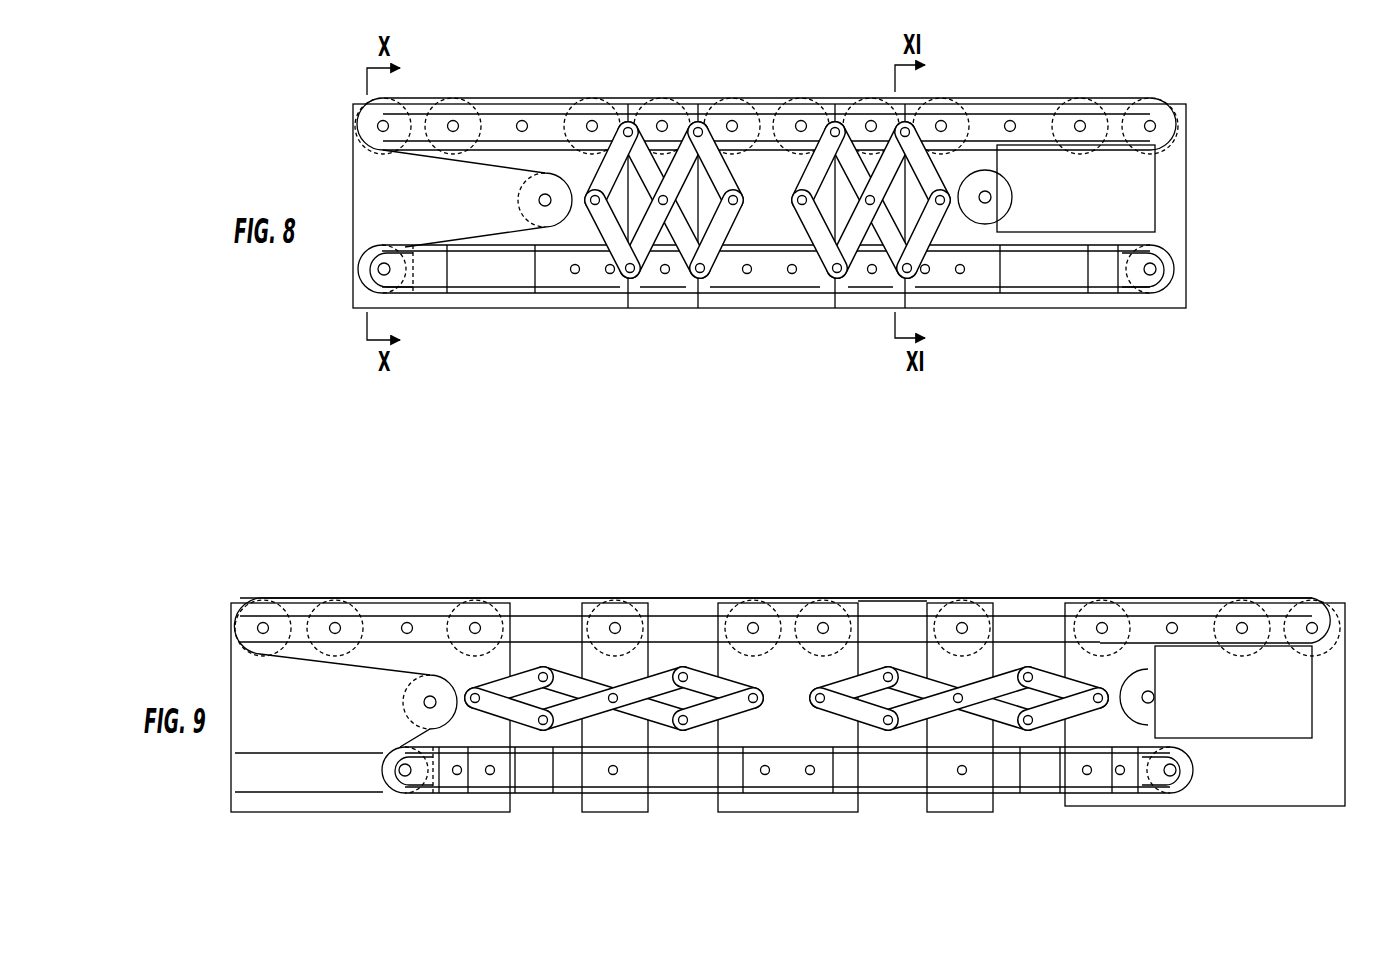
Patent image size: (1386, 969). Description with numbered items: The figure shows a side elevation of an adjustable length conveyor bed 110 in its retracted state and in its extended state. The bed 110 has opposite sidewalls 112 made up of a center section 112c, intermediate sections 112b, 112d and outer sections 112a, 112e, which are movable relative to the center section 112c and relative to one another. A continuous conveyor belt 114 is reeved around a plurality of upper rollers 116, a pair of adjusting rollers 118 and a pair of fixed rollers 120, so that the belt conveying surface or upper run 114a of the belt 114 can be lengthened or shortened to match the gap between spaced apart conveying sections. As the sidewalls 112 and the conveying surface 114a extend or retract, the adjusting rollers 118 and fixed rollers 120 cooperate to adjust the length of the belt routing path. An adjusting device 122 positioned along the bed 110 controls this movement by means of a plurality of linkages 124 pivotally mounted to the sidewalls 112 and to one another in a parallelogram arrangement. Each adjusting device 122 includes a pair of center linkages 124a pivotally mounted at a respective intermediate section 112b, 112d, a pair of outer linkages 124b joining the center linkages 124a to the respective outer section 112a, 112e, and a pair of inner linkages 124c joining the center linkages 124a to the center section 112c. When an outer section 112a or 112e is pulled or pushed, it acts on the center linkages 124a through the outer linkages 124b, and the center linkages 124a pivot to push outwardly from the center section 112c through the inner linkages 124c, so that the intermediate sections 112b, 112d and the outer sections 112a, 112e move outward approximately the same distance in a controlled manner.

In FIG. 8, the adjustable conveyor bed 110 is at (565, 388).
In FIG. 9, the adjustable conveyor bed 110 is at (499, 548).
In FIG. 8, the sidewalls 112 is at (1212, 263).
In FIG. 9, the sidewalls 112 is at (381, 829).
In FIG. 8, the outer section 112a is at (493, 302).
In FIG. 9, the outer section 112a is at (280, 805).
In FIG. 8, the intermediate section 112b is at (653, 302).
In FIG. 9, the intermediate section 112b is at (635, 803).
In FIG. 8, the center section 112c is at (765, 302).
In FIG. 9, the center section 112c is at (767, 807).
In FIG. 8, the intermediate section 112d is at (870, 307).
In FIG. 9, the intermediate section 112d is at (950, 803).
In FIG. 8, the outer section 112e is at (1130, 308).
In FIG. 9, the outer section 112e is at (1268, 797).
In FIG. 8, the continuous conveyor belt 114 is at (510, 97).
In FIG. 9, the continuous conveyor belt 114 is at (537, 597).
In FIG. 9, the upper run 114a is at (877, 580).
In FIG. 8, the upper rollers 116 is at (753, 80).
In FIG. 9, the upper rollers 116 is at (335, 597).
In FIG. 8, the adjusting rollers 118 is at (532, 198).
In FIG. 9, the adjusting rollers 118 is at (401, 701).
In FIG. 8, the fixed rollers 120 is at (405, 286).
In FIG. 9, the fixed rollers 120 is at (402, 797).
In FIG. 8, the adjusting device 122 is at (644, 340).
In FIG. 9, the adjusting device 122 is at (689, 573).
In FIG. 8, the linkages 124 is at (802, 211).
In FIG. 9, the linkages 124 is at (807, 679).
In FIG. 8, the center linkages 124a is at (638, 155).
In FIG. 9, the center linkages 124a is at (653, 686).
In FIG. 8, the outer linkages 124b is at (933, 173).
In FIG. 9, the outer linkages 124b is at (1055, 677).
In FIG. 8, the inner linkages 124c is at (727, 178).
In FIG. 9, the inner linkages 124c is at (705, 672).